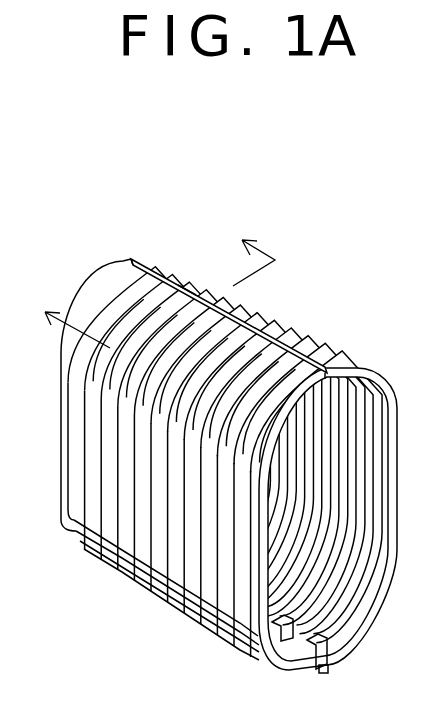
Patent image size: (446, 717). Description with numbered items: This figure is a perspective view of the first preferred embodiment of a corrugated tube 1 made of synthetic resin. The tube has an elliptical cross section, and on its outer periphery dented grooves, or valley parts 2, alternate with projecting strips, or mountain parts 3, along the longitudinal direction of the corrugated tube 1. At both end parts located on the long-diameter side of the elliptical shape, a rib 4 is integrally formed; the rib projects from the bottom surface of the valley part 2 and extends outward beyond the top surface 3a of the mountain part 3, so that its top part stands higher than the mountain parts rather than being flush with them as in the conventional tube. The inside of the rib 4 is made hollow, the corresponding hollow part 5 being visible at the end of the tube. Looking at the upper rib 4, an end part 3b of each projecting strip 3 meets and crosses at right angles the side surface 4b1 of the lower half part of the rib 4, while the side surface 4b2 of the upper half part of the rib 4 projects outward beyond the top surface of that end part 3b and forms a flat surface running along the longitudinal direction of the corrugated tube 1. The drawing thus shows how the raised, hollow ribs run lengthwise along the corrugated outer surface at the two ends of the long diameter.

The corrugated tube 1 is at (201, 433).
The dented groove (valley part) 2 is at (201, 425).
The projecting strip (mountain part) 3 is at (112, 318).
The top surface of the mountain part 3a is at (124, 319).
The end part of the projecting strip 3b is at (162, 290).
The rib 4 is at (228, 433).
The side surface of the lower half part of the rib 4b1 is at (114, 307).
The side surface of the upper half part of the rib 4b2 is at (222, 234).
The hollow part 5 is at (330, 660).